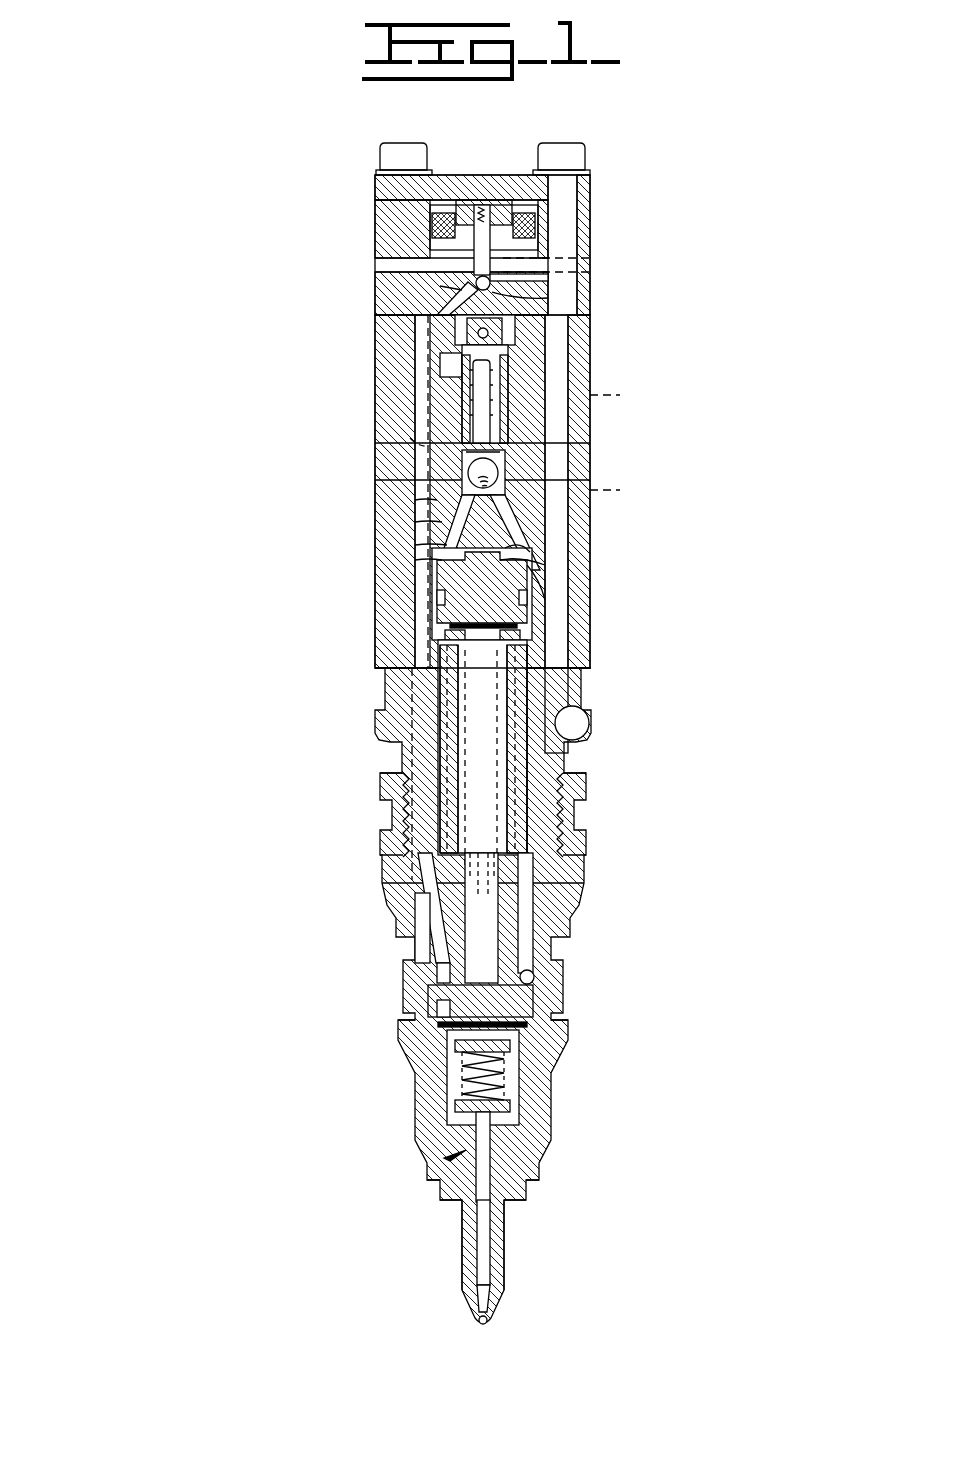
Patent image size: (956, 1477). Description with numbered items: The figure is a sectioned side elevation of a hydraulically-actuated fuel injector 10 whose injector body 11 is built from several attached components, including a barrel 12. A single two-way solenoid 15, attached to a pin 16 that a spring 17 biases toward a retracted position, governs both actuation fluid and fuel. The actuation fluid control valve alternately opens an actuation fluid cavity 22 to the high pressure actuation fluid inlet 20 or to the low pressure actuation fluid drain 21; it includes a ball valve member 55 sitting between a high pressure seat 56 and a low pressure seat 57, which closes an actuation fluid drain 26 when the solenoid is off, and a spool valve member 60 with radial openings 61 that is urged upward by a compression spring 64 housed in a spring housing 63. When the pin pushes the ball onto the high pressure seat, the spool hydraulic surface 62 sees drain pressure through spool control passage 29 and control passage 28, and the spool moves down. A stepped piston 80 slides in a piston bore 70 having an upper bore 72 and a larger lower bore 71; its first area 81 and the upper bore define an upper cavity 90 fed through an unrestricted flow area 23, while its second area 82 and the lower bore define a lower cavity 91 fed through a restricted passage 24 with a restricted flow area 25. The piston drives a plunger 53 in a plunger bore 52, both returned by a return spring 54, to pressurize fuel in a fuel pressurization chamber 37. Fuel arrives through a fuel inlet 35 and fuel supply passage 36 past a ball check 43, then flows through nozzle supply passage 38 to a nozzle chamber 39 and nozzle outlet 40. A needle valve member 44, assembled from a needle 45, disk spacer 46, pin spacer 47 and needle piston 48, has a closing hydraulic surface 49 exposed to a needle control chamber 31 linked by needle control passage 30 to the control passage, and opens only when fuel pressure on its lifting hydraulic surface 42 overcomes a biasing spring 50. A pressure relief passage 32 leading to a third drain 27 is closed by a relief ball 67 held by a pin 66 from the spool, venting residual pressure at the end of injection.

The hydraulically-actuated fuel injector 10 is at (228, 710).
The injector body 11 is at (586, 845).
The barrel 12 is at (378, 728).
The solenoid 15 is at (556, 232).
The pin 16 is at (472, 276).
The spring 17 is at (566, 258).
The actuation fluid inlet 20 is at (590, 740).
The actuation fluid drain 21 is at (595, 392).
The actuation fluid cavity 22 is at (425, 402).
The relatively unrestricted flow area 23 is at (437, 500).
The restricted passage 24 is at (442, 522).
The restricted flow area 25 is at (447, 545).
The actuation fluid drain 26 is at (440, 262).
The third drain 27 is at (595, 490).
The control passage 28 is at (472, 285).
The spool control passage 29 is at (410, 440).
The needle control passage 30 is at (411, 648).
The needle control chamber 31 is at (440, 1030).
The pressure relief passage 32 is at (532, 520).
The fuel inlet 35 is at (417, 960).
The fuel supply passage 36 is at (422, 985).
The fuel pressurization chamber 37 is at (527, 948).
The nozzle supply passage 38 is at (517, 1092).
The nozzle chamber 39 is at (456, 1200).
The nozzle outlet 40 is at (487, 1324).
The lifting hydraulic surface 42 is at (472, 1306).
The ball check 43 is at (422, 1017).
The needle valve member 44 is at (450, 1170).
The needle 45 is at (496, 1192).
The disk spacer 46 is at (507, 1118).
The pin spacer 47 is at (447, 1090).
The needle piston 48 is at (532, 1027).
The closing hydraulic surface 49 is at (522, 1002).
The biasing spring 50 is at (507, 1068).
The plunger bore 52 is at (496, 892).
The plunger 53 is at (446, 690).
The return spring 54 is at (566, 806).
The ball valve member 55 is at (546, 273).
The high pressure seat 56 is at (566, 306).
The low pressure seat 57 is at (440, 288).
The spool valve member 60 is at (470, 355).
The radial openings 61 is at (456, 340).
The spool hydraulic surface 62 is at (466, 470).
The spring housing 63 is at (520, 362).
The compression spring 64 is at (504, 333).
The pin 66 is at (502, 400).
The relief ball 67 is at (502, 468).
The piston bore 70 is at (527, 690).
The lower bore 71 is at (450, 625).
The upper bore 72 is at (527, 563).
The stepped piston 80 is at (527, 600).
The first area 81 is at (522, 552).
The second area 82 is at (522, 632).
The upper cavity 90 is at (532, 560).
The lower cavity 91 is at (442, 560).